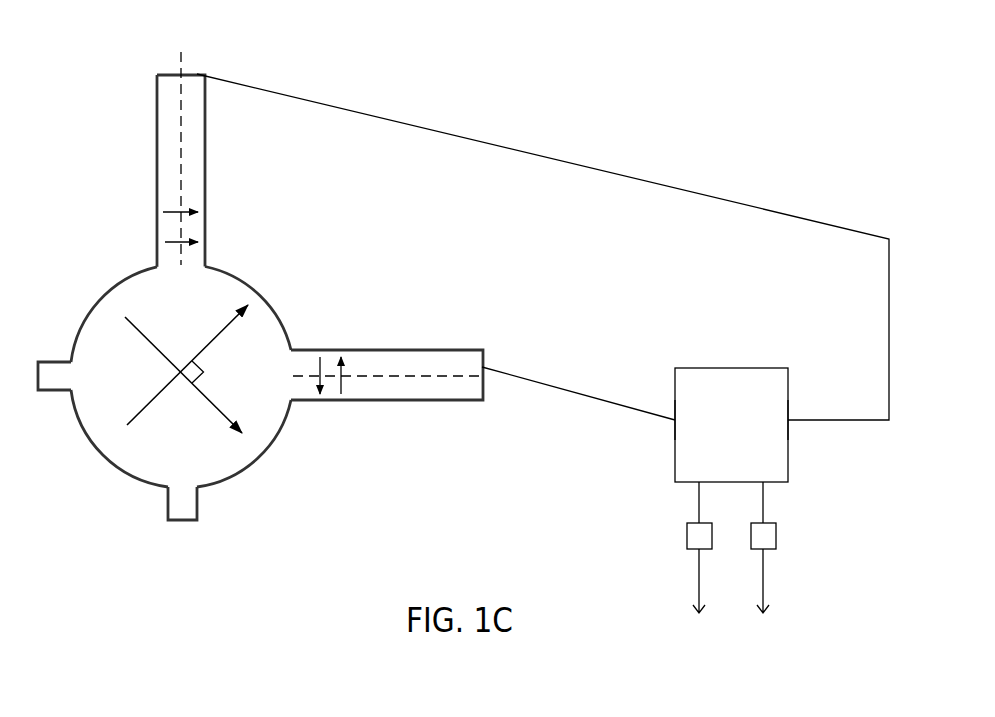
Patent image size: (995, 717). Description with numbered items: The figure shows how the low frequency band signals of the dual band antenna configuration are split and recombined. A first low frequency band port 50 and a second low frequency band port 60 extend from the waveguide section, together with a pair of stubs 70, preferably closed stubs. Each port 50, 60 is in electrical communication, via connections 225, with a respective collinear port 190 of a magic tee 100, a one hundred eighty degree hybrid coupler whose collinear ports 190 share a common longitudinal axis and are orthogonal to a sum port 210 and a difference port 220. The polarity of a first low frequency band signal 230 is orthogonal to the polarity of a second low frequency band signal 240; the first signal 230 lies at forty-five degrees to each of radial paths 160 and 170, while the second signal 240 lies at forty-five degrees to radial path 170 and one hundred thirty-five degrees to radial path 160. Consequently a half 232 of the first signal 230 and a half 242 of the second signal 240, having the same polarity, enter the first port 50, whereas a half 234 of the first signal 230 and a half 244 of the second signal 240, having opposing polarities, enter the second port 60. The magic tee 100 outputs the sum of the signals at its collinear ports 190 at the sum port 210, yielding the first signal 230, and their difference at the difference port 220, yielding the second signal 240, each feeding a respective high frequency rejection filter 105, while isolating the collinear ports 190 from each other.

The first low frequency band port 50 is at (207, 138).
The second low frequency band port 60 is at (413, 398).
The stubs 70 is at (63, 393).
The magic tee 100 is at (789, 452).
The high frequency rejection filters 105 is at (687, 537).
The radial path 160 is at (180, 149).
The radial path 170 is at (413, 375).
The collinear ports 190 is at (675, 428).
The sum port 210 is at (699, 486).
The difference port 220 is at (763, 487).
The connections 225 is at (688, 189).
The first low frequency band signal 230 is at (157, 402).
The half of first low frequency band signal 232 is at (163, 210).
The half of first low frequency band signal 234 is at (357, 376).
The second low frequency band signal 240 is at (162, 350).
The half of second low frequency band signal 242 is at (180, 245).
The half of second low frequency band signal 244 is at (317, 370).